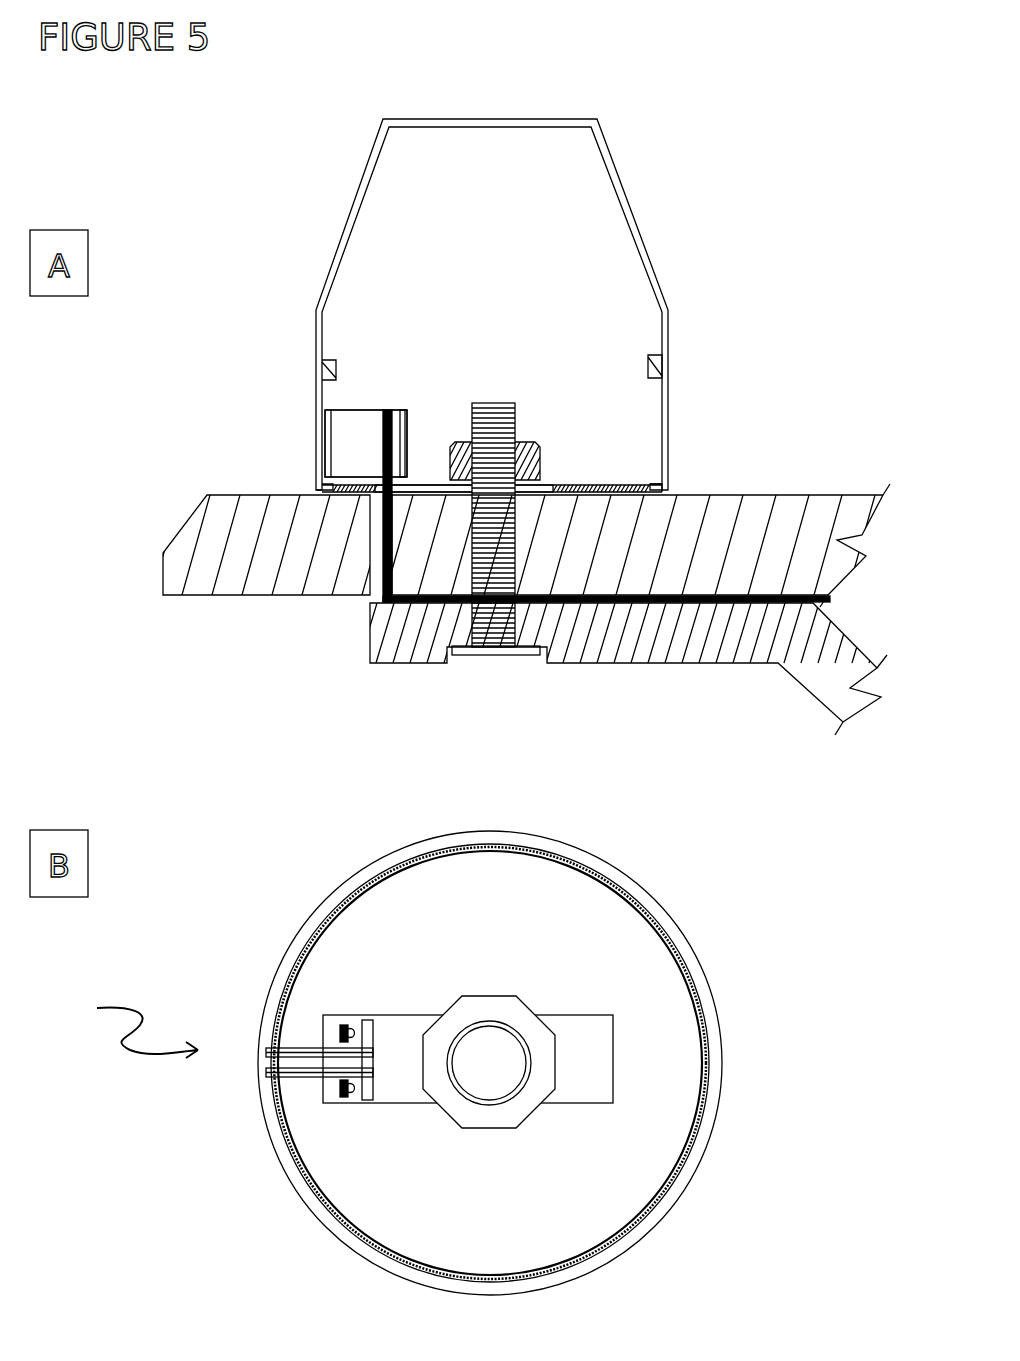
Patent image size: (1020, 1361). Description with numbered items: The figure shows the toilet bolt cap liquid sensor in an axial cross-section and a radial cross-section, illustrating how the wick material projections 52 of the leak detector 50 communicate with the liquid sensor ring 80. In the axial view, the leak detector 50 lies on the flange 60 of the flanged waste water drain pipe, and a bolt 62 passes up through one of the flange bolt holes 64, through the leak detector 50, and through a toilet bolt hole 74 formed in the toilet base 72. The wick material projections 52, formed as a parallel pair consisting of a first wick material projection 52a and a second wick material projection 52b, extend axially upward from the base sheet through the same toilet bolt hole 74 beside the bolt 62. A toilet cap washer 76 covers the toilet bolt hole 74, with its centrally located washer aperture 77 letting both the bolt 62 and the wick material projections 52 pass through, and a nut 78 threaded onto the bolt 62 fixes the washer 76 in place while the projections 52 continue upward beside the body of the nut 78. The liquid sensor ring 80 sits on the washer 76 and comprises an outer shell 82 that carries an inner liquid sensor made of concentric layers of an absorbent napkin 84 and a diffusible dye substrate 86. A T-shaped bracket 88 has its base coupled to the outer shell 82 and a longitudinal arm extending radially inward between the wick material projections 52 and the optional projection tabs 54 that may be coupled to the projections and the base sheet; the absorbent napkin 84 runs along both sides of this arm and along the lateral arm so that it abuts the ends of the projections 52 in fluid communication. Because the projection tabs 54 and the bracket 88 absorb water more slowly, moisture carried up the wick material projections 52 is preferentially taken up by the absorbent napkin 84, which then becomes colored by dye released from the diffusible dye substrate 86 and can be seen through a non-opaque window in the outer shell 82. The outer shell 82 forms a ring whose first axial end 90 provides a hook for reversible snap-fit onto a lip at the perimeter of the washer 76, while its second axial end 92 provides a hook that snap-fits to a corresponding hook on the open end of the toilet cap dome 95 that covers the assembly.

In FIG. 5A, the leak detector 50 is at (782, 598).
In FIG. 5A, the wick material projections 52 is at (385, 428).
In FIG. 5B, the first wick material projection 52a is at (352, 1025).
In FIG. 5B, the second wick material projection 52b is at (352, 1097).
In FIG. 5B, the projection tabs 54 is at (348, 1028).
In FIG. 5A, the flange 60 is at (642, 650).
In FIG. 5A, the bolts 62 is at (493, 655).
In FIG. 5B, the bolts 62 is at (487, 1050).
In FIG. 5A, the flange bolt holes 64 is at (470, 630).
In FIG. 5A, the toilet base 72 is at (258, 577).
In FIG. 5A, the toilet bolt holes 74 is at (372, 567).
In FIG. 5A, the toilet cap washer 76 is at (606, 487).
In FIG. 5B, the toilet cap washer 76 is at (655, 1035).
In FIG. 5A, the washer aperture 77 is at (548, 486).
In FIG. 5B, the washer aperture 77 is at (590, 1105).
In FIG. 5A, the nut 78 is at (528, 440).
In FIG. 5B, the nut 78 is at (525, 1010).
In FIG. 5A, the liquid sensor ring 80 is at (318, 440).
In FIG. 5B, the liquid sensor ring 80 is at (131, 1027).
In FIG. 5B, the outer shell 82 is at (300, 932).
In FIG. 5A, the absorbent napkin 84 is at (392, 418).
In FIG. 5B, the absorbent napkin 84 is at (347, 897).
In FIG. 5B, the diffusible dye substrate 86 is at (383, 883).
In FIG. 5A, the T-shaped bracket 88 is at (408, 440).
In FIG. 5B, the T-shaped bracket 88 is at (373, 1040).
In FIG. 5A, the first axial end 90 is at (668, 490).
In FIG. 5A, the second axial end 92 is at (660, 367).
In FIG. 5A, the toilet cap dome 95 is at (358, 190).